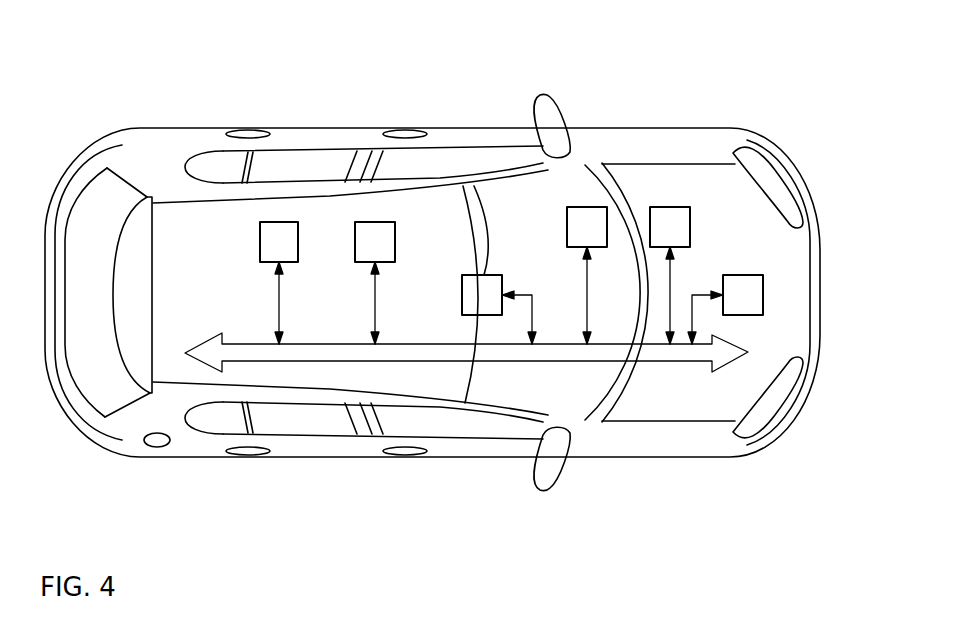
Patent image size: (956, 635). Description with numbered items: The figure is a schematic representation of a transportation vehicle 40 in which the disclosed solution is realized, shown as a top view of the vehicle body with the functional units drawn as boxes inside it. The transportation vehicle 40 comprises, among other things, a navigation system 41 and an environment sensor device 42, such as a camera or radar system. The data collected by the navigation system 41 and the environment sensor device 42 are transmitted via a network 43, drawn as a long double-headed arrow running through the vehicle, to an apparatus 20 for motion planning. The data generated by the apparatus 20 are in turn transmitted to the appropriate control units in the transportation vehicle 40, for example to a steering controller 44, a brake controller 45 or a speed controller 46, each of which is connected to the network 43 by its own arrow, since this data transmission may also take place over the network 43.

The apparatus for motion planning 20 is at (280, 223).
The transportation vehicle 40 is at (697, 128).
The navigation system 41 is at (373, 223).
The environment sensor device 42 is at (473, 275).
The network 43 is at (307, 361).
The steering controller 44 is at (588, 207).
The brake controller 45 is at (745, 275).
The speed controller 46 is at (670, 207).